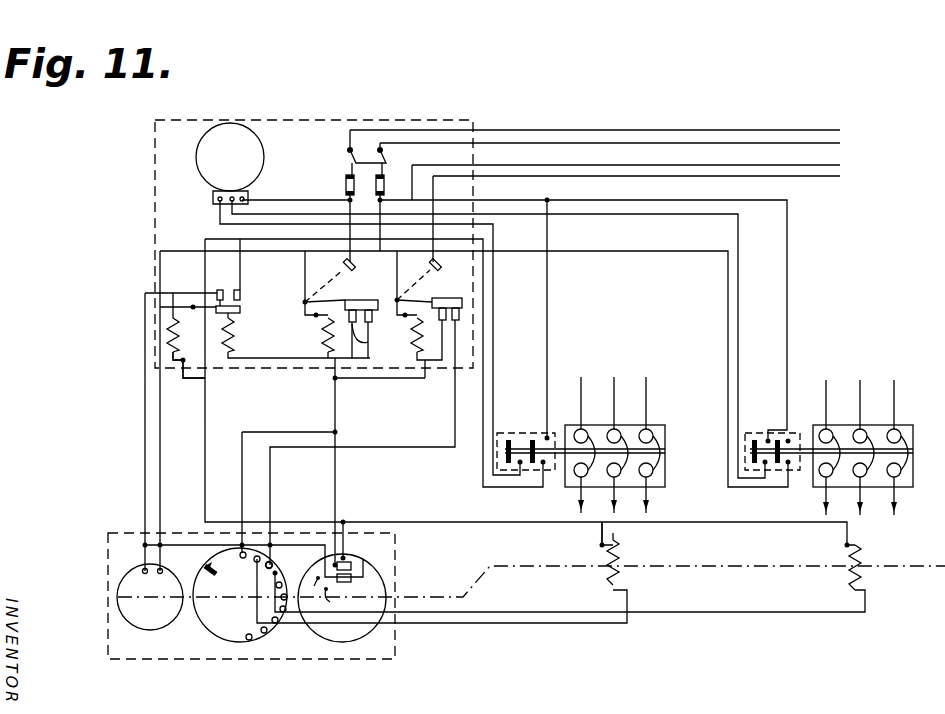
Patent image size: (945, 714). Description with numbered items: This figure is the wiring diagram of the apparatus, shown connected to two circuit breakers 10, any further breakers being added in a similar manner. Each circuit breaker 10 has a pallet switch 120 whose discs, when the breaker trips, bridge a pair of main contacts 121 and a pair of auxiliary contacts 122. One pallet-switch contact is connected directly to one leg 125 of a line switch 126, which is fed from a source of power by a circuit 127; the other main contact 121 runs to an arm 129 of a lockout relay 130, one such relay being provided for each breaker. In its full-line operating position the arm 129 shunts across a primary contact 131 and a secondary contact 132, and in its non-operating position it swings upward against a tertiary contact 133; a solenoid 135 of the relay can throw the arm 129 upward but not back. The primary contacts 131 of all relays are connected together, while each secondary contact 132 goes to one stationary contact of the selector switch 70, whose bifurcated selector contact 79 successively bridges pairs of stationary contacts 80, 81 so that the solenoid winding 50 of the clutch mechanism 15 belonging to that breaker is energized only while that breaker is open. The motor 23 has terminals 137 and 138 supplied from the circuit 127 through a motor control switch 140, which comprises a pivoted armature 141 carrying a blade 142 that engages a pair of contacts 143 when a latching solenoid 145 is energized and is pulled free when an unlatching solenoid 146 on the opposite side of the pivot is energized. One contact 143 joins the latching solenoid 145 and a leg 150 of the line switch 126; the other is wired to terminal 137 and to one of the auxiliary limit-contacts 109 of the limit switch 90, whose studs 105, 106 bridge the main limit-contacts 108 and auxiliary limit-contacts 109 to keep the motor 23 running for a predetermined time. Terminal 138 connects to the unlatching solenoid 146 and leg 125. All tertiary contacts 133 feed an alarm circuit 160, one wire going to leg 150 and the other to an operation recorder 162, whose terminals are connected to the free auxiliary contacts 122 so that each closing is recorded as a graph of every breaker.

The circuit breaker 10 is at (667, 424).
The clutch mechanism 15 is at (600, 578).
The motor 23 is at (114, 618).
The solenoid winding 50 is at (622, 578).
The selector switch 70 is at (202, 638).
The bifurcated selector contact 79 is at (214, 577).
The stationary contact 80 is at (254, 558).
The stationary contact 81 is at (272, 565).
The limit switch 90 is at (371, 642).
The stud 105 is at (316, 584).
The stud 106 is at (339, 599).
The main limit-contacts 108 is at (352, 566).
The auxiliary limit-contacts 109 is at (355, 582).
The pallet switch 120 is at (556, 440).
The main contacts 121 is at (545, 436).
The auxiliary contacts 122 is at (521, 432).
The leg 125 is at (387, 181).
The line switch 126 is at (344, 174).
The circuit 127 is at (740, 143).
The arm 129 is at (373, 280).
The lockout relay 130 is at (358, 305).
The primary contact 131 is at (367, 341).
The secondary contact 132 is at (414, 322).
The tertiary contact 133 is at (344, 272).
The solenoid 135 is at (325, 332).
The terminal 137 is at (142, 573).
The terminal 138 is at (162, 570).
The motor control switch 140 is at (161, 317).
The pivoted armature 141 is at (192, 305).
The blade 142 is at (241, 310).
The contacts 143 is at (241, 294).
The latching solenoid 145 is at (235, 336).
The unlatching solenoid 146 is at (164, 336).
The leg 150 is at (344, 190).
The alarm circuit 160 is at (823, 178).
The operation recorder 162 is at (252, 134).